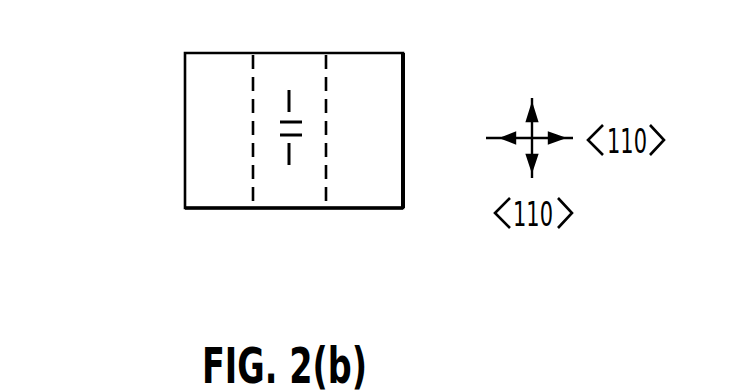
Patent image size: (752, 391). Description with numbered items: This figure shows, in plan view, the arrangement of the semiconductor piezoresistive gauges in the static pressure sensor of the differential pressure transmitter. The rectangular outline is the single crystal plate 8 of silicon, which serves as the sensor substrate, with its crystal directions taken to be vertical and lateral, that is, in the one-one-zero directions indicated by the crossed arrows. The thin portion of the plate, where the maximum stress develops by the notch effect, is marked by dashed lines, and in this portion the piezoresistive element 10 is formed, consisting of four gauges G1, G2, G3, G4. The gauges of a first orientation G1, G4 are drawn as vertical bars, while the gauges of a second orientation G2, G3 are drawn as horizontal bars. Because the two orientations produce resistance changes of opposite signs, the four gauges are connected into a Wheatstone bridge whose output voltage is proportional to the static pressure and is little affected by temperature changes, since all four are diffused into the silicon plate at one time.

The single crystal plate 8 is at (407, 82).
The piezoresistive element 10 is at (169, 174).
The piezoresistive gauge of a first orientation G1 is at (278, 102).
The piezoresistive gauge of a second orientation G2 is at (273, 122).
The piezoresistive gauge of a second orientation G3 is at (268, 137).
The piezoresistive gauge of a first orientation G4 is at (200, 218).